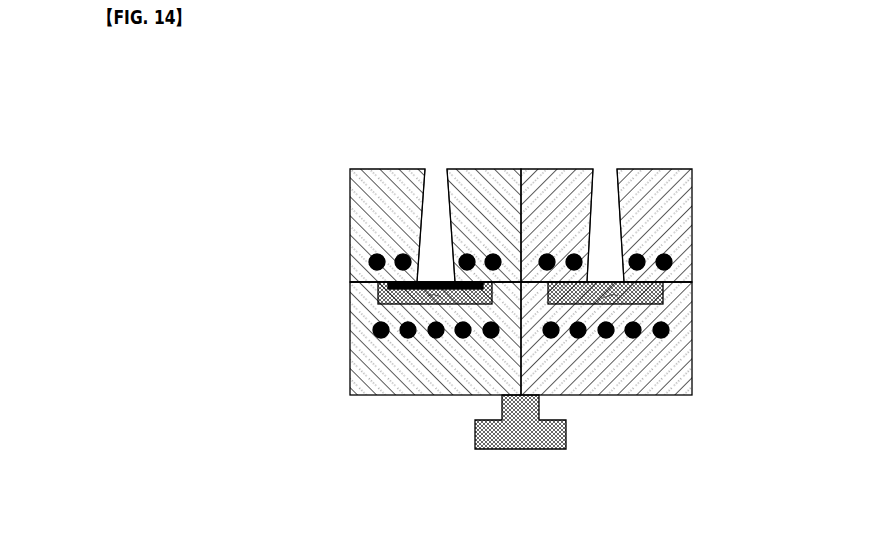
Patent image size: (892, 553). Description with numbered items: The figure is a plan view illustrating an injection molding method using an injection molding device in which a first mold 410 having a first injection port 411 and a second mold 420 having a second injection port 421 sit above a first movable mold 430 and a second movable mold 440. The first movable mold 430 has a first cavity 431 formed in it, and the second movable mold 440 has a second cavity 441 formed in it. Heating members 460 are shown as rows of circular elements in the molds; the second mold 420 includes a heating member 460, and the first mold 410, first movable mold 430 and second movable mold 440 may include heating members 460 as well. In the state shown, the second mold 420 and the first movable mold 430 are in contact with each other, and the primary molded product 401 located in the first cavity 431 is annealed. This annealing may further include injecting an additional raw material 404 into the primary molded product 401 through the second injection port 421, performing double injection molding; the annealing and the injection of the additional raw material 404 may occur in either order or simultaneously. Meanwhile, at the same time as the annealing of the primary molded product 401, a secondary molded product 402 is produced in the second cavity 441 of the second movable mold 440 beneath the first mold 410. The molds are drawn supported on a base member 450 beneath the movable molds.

The primary molded product 401 is at (390, 300).
The secondary molded product 402 is at (650, 294).
The additional raw material 404 is at (397, 279).
The first mold 410 is at (656, 169).
The first injection port 411 is at (588, 185).
The second mold 420 is at (379, 169).
The second injection port 421 is at (438, 184).
The first movable mold 430 is at (350, 343).
The first cavity 431 is at (441, 297).
The second movable mold 440 is at (692, 342).
The second cavity 441 is at (603, 298).
The support stem 450 is at (521, 449).
The heating member 460 is at (494, 324).